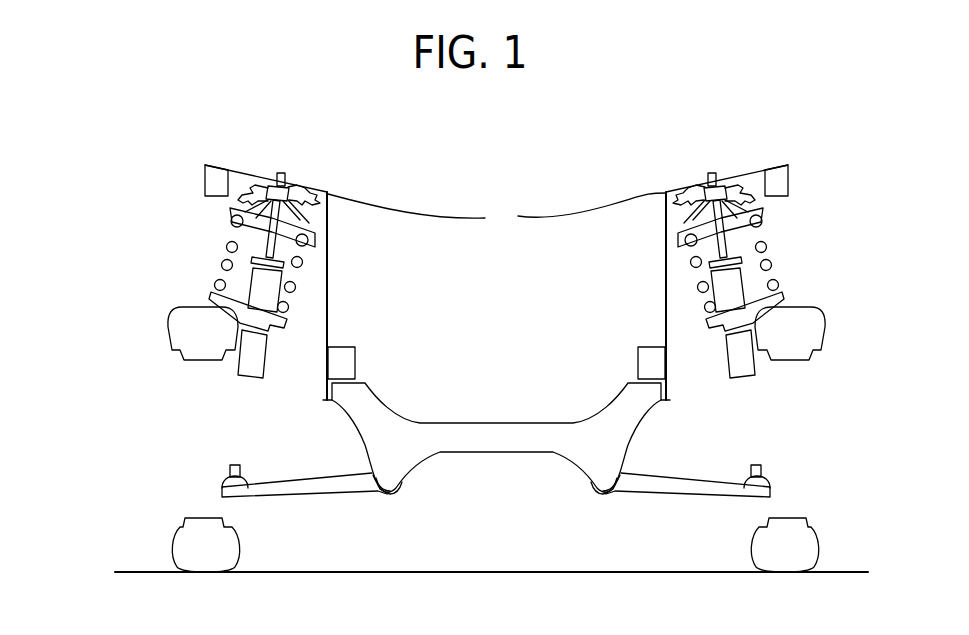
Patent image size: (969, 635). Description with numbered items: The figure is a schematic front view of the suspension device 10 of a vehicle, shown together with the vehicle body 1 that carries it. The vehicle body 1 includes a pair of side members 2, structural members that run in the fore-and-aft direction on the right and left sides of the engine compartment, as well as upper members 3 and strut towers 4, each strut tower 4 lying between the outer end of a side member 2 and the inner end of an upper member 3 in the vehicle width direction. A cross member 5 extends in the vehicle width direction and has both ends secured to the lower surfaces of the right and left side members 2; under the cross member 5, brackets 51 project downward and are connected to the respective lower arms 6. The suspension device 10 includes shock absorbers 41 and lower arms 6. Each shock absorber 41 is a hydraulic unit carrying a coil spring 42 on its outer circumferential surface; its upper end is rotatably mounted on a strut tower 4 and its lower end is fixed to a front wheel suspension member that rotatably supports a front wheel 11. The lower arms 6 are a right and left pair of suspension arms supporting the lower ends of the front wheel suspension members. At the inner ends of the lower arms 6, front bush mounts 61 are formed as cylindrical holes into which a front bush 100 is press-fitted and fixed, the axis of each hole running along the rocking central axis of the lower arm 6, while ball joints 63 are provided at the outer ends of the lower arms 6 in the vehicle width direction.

The vehicle body 1 is at (466, 199).
The side members 2 is at (638, 348).
The upper members 3 is at (205, 178).
The strut towers 4 is at (497, 212).
The cross member 5 is at (468, 423).
The brackets 51 is at (597, 467).
The lower arms 6 is at (296, 476).
The front bush mounts 61 is at (523, 520).
The front bush 100 is at (382, 492).
The ball joints 63 is at (222, 486).
The suspension device 10 is at (100, 390).
The front wheel 11 is at (167, 326).
The shock absorbers 41 is at (253, 266).
The coil spring 42 is at (228, 240).